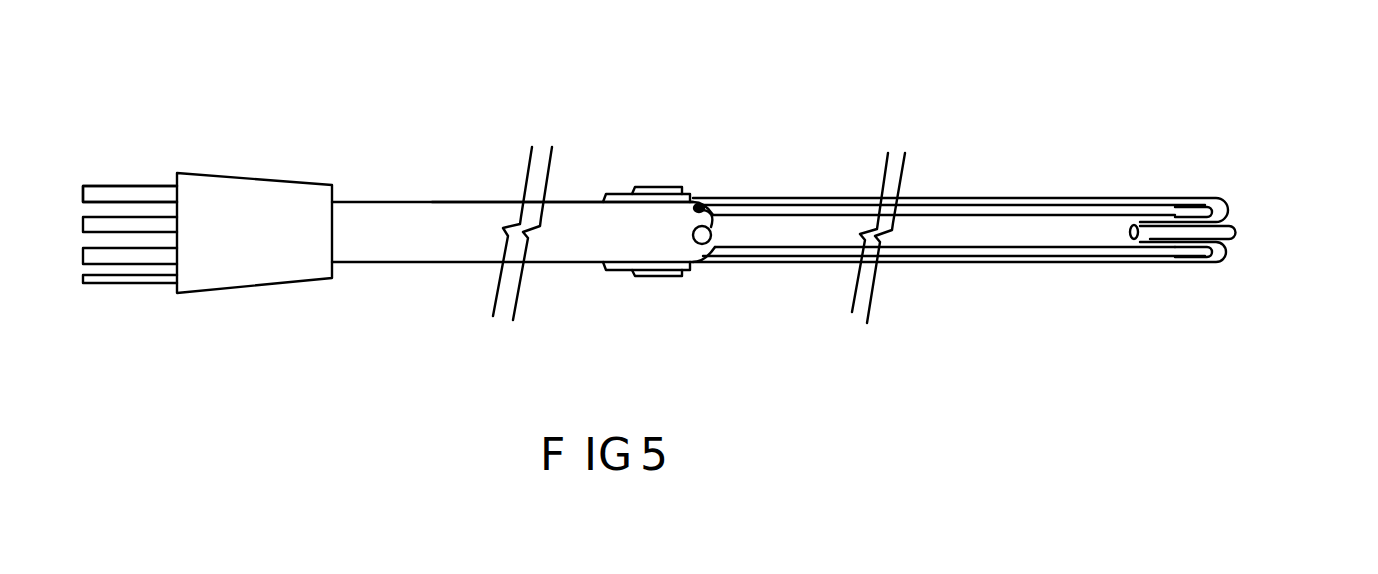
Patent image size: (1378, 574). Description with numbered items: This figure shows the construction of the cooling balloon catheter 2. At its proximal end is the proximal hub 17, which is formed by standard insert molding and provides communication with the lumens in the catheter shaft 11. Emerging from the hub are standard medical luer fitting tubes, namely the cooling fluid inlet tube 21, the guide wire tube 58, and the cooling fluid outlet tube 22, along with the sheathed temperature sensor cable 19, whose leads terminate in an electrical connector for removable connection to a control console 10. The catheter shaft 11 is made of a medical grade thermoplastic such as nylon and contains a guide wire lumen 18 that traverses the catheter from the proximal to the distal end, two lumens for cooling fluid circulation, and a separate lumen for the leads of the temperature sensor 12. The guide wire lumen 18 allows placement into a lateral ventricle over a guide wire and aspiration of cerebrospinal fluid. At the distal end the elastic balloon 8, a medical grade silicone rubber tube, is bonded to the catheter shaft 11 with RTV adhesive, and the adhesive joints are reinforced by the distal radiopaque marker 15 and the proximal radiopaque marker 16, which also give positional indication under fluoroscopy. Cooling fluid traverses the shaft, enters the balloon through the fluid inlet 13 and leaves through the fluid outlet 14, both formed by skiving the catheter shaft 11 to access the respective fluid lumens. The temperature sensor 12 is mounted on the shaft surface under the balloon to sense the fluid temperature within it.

The cooling balloon catheter 2 is at (565, 202).
The elastic balloon 8 is at (958, 198).
The control console 10 is at (1235, 233).
The catheter shaft 11 is at (433, 202).
The temperature sensor 12 is at (957, 232).
The fluid inlet 13 is at (1135, 226).
The fluid outlet 14 is at (712, 226).
The distal radiopaque marker 15 is at (1192, 253).
The proximal radiopaque marker 16 is at (660, 187).
The proximal hub 17 is at (213, 173).
The guide wire lumen 18 is at (120, 185).
The temperature sensor cable 19 is at (165, 282).
The cooling fluid inlet tube 21 is at (95, 185).
The cooling fluid outlet tube 22 is at (127, 282).
The guide wire tube 58 is at (97, 217).